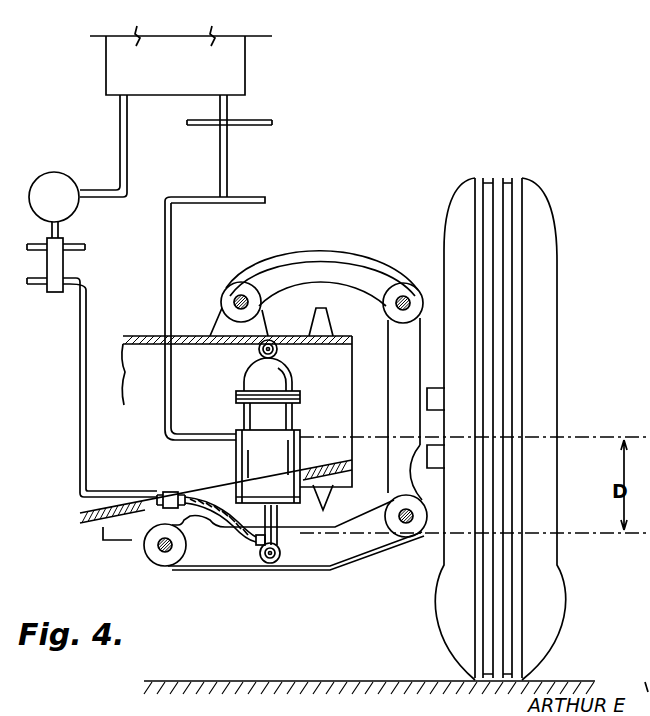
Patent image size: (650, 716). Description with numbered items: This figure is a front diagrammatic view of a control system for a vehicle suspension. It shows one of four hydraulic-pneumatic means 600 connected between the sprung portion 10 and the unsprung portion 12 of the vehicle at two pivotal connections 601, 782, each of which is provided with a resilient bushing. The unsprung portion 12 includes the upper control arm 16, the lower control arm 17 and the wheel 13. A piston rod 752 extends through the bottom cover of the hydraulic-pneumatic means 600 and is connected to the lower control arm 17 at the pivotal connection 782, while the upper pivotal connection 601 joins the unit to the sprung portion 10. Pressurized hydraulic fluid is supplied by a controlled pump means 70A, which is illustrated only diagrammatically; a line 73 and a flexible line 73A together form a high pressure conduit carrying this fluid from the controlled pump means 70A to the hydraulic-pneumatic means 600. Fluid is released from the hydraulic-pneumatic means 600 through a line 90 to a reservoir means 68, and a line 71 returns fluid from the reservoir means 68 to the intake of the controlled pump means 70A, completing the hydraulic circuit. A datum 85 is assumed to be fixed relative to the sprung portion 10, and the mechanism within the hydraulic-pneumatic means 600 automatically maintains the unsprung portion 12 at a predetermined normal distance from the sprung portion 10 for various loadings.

The reservoir means 68 is at (183, 82).
The line 71 is at (120, 141).
The controlled pump means 70A is at (60, 153).
The line 73 is at (33, 239).
The line 90 is at (251, 121).
The sprung portion 10 is at (222, 386).
The piston rod 752 is at (283, 518).
The upper control arm 16 is at (340, 263).
The pivotal connection 601 is at (278, 354).
The hydraulic-pneumatic means 600 is at (313, 449).
The pivotal connection 782 is at (267, 567).
The lower control arm 17 is at (230, 520).
The flexible line 73A is at (211, 518).
The unsprung portion 12 is at (418, 540).
The wheel 13 is at (460, 213).
The datum 85 is at (612, 436).